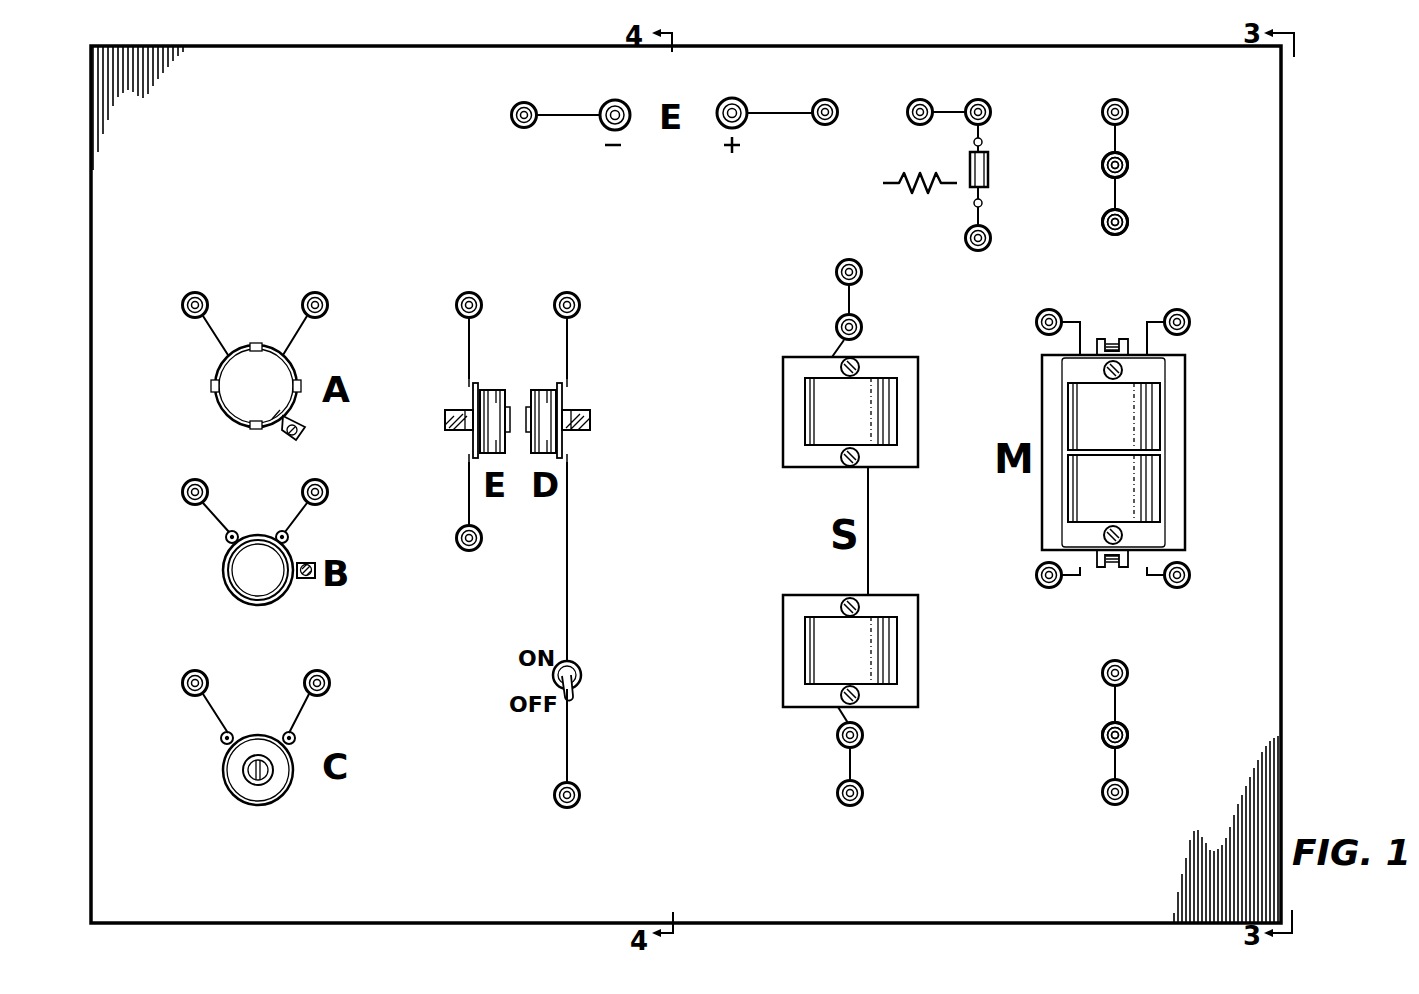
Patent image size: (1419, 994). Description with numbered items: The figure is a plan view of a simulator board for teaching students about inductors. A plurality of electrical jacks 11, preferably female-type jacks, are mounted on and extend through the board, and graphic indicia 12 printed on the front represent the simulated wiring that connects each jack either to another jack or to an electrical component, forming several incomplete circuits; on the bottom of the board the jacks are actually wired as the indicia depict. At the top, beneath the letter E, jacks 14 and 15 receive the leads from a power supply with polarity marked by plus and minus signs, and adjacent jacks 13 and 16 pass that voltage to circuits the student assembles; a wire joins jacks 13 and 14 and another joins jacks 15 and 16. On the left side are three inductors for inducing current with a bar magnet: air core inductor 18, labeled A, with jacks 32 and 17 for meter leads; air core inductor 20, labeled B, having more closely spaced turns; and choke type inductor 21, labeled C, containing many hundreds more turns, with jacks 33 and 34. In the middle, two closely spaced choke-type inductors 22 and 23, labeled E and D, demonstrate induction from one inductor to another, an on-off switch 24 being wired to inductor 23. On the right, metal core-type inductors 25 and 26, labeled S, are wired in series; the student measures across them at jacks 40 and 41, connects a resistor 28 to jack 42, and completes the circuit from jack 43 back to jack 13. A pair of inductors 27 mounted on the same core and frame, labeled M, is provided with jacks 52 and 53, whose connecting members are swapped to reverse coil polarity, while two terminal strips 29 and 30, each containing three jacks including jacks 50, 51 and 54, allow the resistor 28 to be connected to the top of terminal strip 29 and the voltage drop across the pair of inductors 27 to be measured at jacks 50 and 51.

The electrical jacks 11 is at (971, 101).
The graphic indicia 12 is at (568, 118).
The jack 13 is at (517, 103).
The jack 14 is at (609, 102).
The jack 15 is at (747, 102).
The jack 16 is at (832, 101).
The jack 17 is at (325, 299).
The air core inductor 18 is at (222, 412).
The air core inductor 20 is at (228, 597).
The choke type inductor 21 is at (234, 795).
The choke-type inductor 22 is at (492, 390).
The choke-type inductor 23 is at (540, 390).
The on-off switch 24 is at (584, 668).
The metal core-type inductor 25 is at (783, 413).
The metal core-type inductor 26 is at (783, 653).
The pair of inductors 27 is at (1186, 421).
The resistor 28 is at (990, 170).
The terminal strip 29 is at (1112, 98).
The terminal strip 30 is at (1113, 661).
The jack 32 is at (188, 299).
The jack 33 is at (188, 672).
The jack 34 is at (322, 672).
The jack 40 is at (863, 330).
The jack 41 is at (864, 738).
The jack 42 is at (863, 275).
The jack 43 is at (864, 796).
The jack 50 is at (1130, 167).
The jack 51 is at (1130, 737).
The jack 52 is at (1041, 313).
The jack 53 is at (1182, 312).
The jack 54 is at (1130, 224).